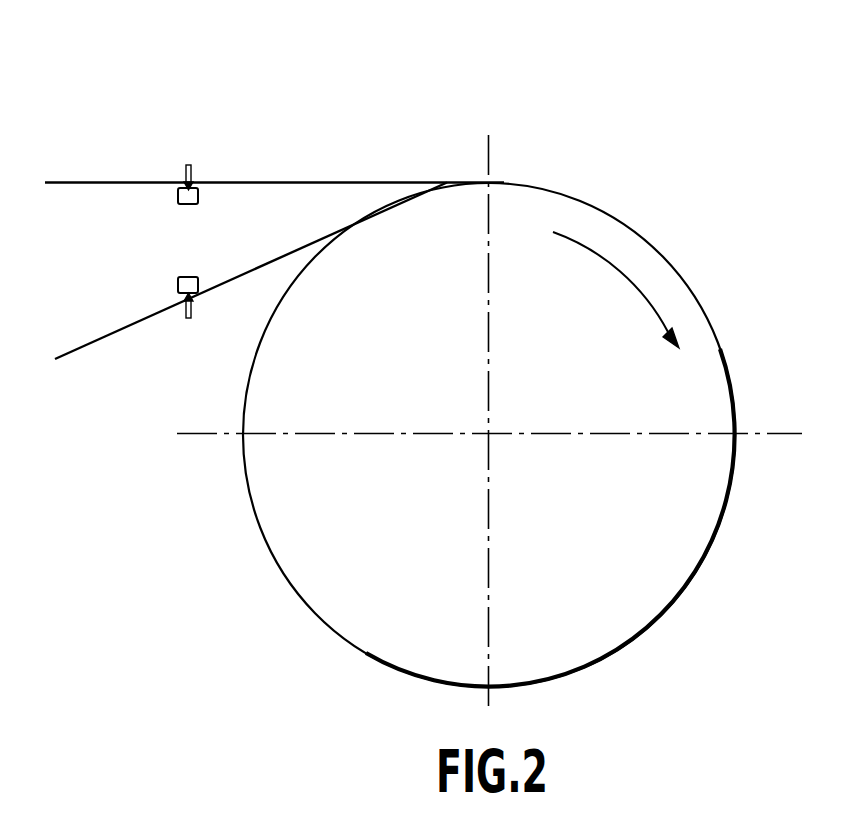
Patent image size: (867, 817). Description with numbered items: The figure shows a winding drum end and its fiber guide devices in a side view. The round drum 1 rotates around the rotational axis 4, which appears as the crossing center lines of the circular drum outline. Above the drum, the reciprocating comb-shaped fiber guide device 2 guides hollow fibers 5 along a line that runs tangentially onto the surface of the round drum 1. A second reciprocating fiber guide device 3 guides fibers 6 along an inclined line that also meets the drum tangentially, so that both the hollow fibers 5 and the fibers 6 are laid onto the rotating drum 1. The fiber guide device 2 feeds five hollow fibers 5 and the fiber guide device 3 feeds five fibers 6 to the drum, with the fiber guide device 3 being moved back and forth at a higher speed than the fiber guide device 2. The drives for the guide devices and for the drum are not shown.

The round drum 1 is at (657, 268).
The comb-shaped fiber guide device 2 is at (186, 165).
The fiber guide device 3 is at (187, 322).
The rotational axis 4 is at (490, 436).
The hollow fibers 5 is at (272, 182).
The fibers 6 is at (82, 350).